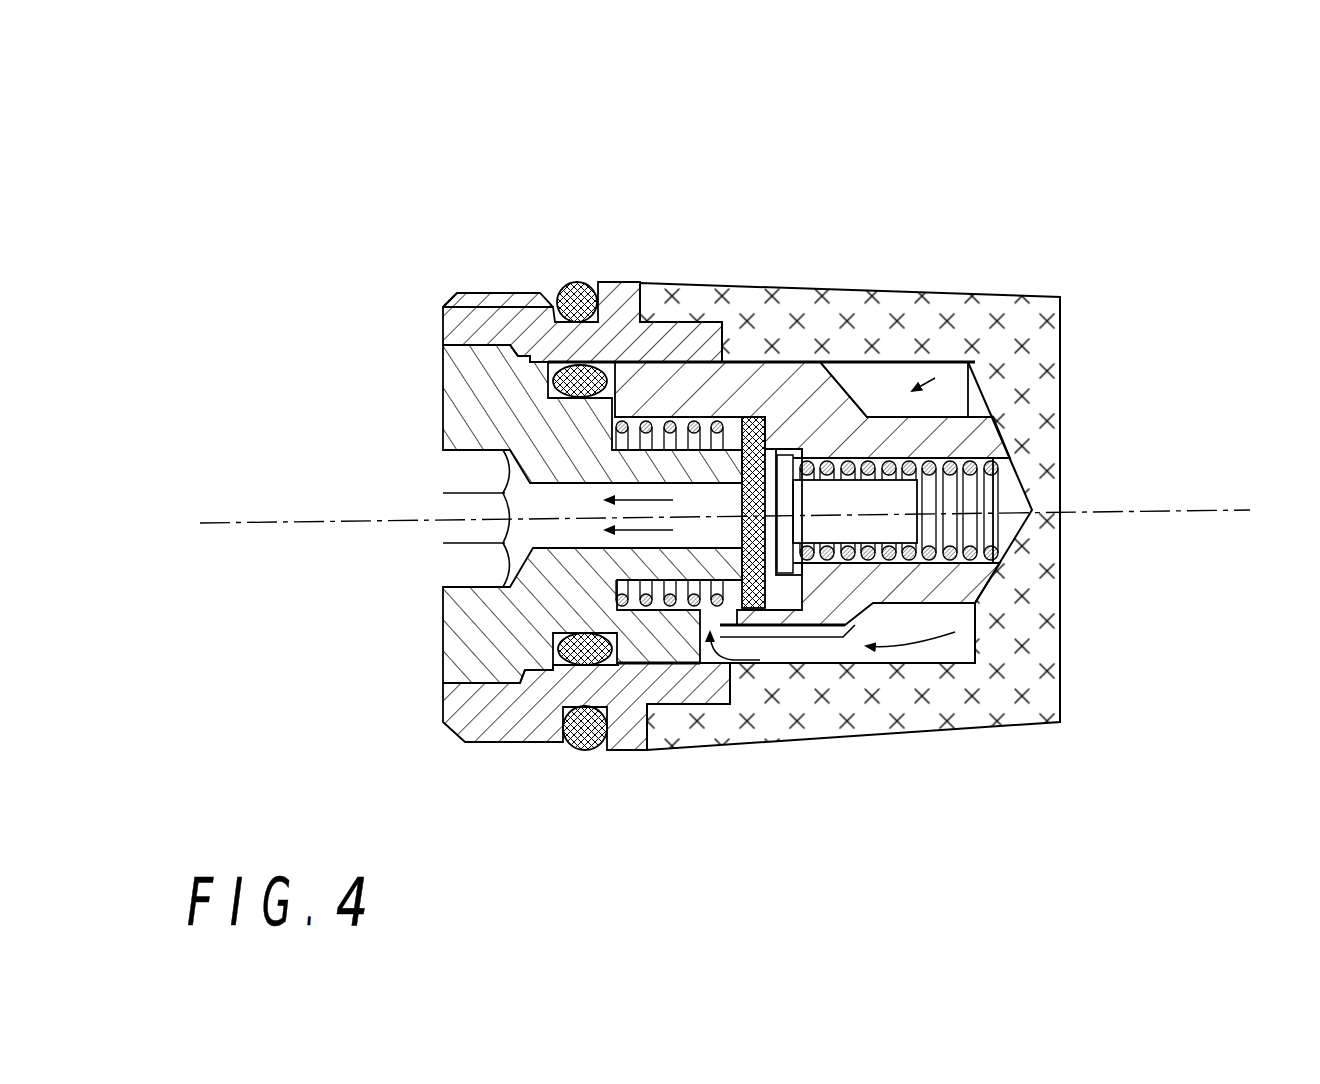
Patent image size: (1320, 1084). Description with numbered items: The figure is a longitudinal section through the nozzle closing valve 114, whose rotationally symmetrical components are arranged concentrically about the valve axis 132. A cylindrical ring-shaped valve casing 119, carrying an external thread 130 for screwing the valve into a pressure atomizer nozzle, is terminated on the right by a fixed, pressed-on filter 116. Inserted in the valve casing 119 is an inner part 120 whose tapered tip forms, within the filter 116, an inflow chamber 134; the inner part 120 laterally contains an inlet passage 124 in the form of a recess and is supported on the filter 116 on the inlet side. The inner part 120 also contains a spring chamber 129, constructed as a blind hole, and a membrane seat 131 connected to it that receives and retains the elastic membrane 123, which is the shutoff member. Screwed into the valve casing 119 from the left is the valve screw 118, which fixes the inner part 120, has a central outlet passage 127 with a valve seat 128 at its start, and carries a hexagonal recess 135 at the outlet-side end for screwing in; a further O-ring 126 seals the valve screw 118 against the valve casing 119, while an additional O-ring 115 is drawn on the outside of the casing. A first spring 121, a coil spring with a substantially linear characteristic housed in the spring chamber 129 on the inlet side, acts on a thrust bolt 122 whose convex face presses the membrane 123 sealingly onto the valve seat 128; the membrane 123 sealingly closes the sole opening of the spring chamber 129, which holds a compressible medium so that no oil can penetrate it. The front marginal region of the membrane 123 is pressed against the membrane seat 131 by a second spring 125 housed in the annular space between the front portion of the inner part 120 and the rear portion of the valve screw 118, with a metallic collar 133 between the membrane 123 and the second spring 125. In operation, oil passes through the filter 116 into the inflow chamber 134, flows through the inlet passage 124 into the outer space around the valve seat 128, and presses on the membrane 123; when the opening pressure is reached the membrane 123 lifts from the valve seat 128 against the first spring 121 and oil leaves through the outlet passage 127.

The nozzle closing valve 114 is at (1130, 645).
The O-ring seal 115 is at (577, 282).
The filter 116 is at (1032, 416).
The valve screw 118 is at (470, 415).
The valve casing 119 is at (455, 302).
The inner part 120 is at (797, 390).
The first spring 121 is at (996, 500).
The thrust bolt 122 is at (878, 523).
The membrane 123 is at (752, 418).
The inlet passage 124 is at (823, 652).
The second spring 125 is at (678, 420).
The O-ring 126 is at (566, 667).
The outlet passage 127 is at (652, 527).
The valve seat 128 is at (878, 390).
The spring chamber 129 is at (1133, 607).
The external thread 130 is at (497, 293).
The membrane seat 131 is at (775, 598).
The valve axis 132 is at (1153, 511).
The metallic collar 133 is at (731, 612).
The inflow chamber 134 is at (963, 360).
The hexagonal recess 135 is at (453, 568).